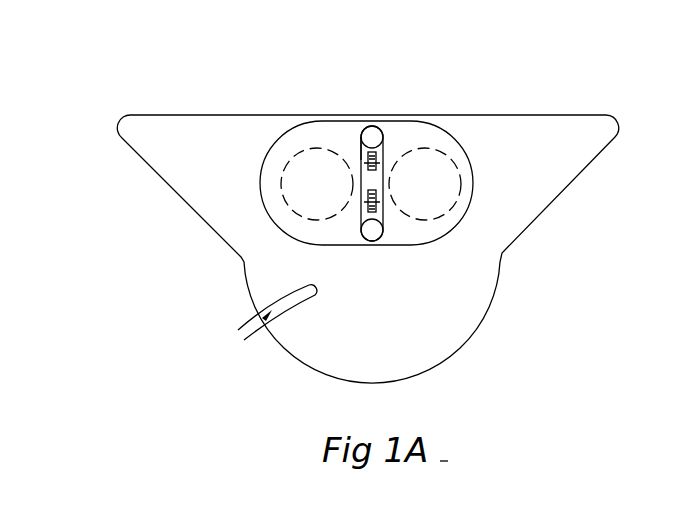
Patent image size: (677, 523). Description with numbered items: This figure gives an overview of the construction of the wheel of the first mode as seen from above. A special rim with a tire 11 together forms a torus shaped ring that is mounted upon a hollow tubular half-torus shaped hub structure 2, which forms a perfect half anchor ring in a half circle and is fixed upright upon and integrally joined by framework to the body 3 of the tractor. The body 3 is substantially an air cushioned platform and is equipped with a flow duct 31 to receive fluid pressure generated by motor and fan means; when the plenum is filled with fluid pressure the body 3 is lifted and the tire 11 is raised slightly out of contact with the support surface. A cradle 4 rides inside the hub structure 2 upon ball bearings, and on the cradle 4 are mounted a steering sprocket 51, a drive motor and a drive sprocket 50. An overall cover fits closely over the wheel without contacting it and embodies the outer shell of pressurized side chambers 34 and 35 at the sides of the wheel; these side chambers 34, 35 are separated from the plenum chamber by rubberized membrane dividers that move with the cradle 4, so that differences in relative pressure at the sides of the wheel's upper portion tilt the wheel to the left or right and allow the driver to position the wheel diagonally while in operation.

The hub structure 2 is at (453, 158).
The body 3 is at (542, 155).
The cradle 4 is at (343, 209).
The tire 11 is at (372, 124).
The flow duct 31 is at (245, 318).
The pressurized side chamber 34 is at (356, 131).
The pressurized side chamber 35 is at (394, 142).
The drive sprocket 50 is at (363, 152).
The steering sprocket 51 is at (362, 214).